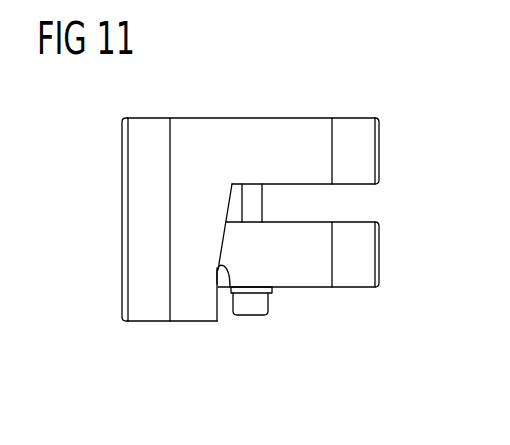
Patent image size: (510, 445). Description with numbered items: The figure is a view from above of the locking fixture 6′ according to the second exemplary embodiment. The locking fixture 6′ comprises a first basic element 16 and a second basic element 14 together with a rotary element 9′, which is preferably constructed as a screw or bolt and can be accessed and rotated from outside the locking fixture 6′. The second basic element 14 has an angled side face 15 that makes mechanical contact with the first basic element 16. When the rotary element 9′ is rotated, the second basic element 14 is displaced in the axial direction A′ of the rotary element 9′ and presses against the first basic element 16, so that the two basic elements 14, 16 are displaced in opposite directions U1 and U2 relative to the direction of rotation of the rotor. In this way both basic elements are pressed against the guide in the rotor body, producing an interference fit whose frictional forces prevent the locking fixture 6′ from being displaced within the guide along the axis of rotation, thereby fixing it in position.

The locking fixture 6′ is at (374, 95).
The rotary element 9′ is at (262, 209).
The second basic element 14 is at (305, 280).
The angled side face 15 is at (226, 290).
The first basic element 16 is at (296, 127).
The displacement direction of first basic element U1 is at (40, 150).
The displacement direction of second basic element U2 is at (456, 255).
The axial direction of the rotary element A′ is at (250, 321).